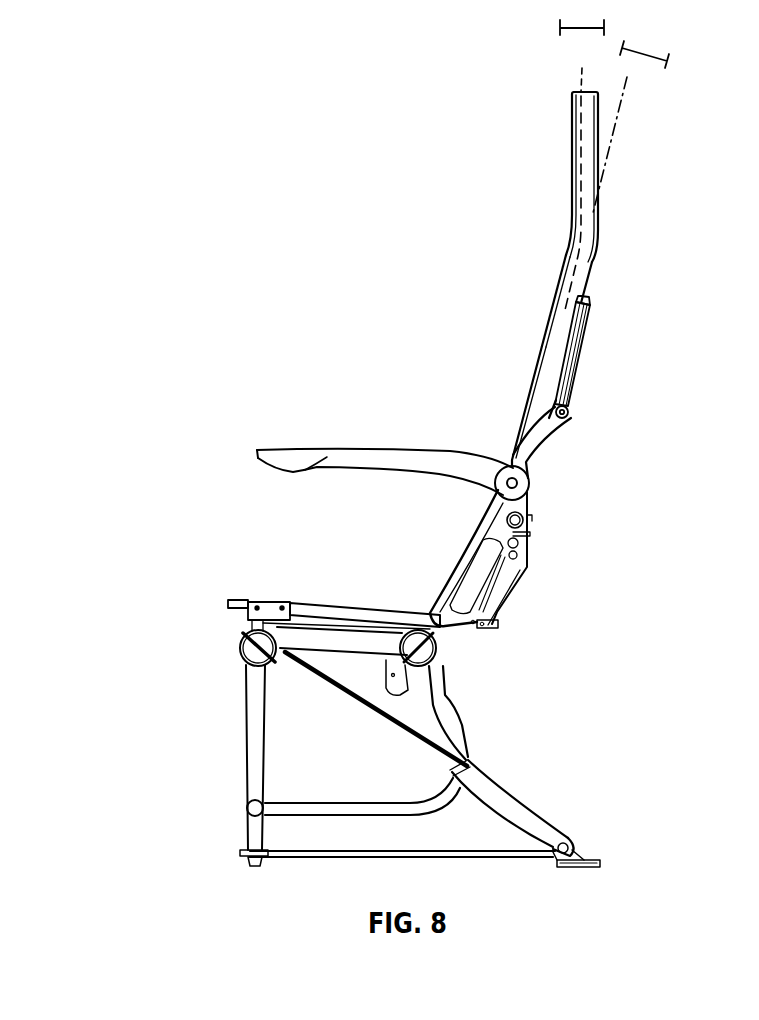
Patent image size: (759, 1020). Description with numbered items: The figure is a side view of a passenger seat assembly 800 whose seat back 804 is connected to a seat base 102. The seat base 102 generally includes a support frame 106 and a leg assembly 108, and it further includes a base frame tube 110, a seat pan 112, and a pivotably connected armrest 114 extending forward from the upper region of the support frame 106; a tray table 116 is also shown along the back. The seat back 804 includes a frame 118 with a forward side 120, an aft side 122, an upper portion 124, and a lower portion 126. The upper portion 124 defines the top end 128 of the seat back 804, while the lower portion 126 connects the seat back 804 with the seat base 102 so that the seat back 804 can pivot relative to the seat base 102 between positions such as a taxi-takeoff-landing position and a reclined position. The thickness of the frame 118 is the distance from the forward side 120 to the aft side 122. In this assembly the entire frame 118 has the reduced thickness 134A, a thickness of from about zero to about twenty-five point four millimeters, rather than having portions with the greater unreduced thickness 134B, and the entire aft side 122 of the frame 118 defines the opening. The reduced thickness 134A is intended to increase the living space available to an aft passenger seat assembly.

The passenger seat assembly 800 is at (216, 113).
The seat base 102 is at (240, 600).
The support frame 106 is at (472, 598).
The leg assembly 108 is at (247, 740).
The base frame tube 110 is at (241, 652).
The seat pan 112 is at (315, 605).
The armrest 114 is at (293, 458).
The tray table 116 is at (578, 362).
The frame 118 is at (590, 105).
The forward side 120 is at (559, 269).
The aft side 122 is at (598, 212).
The upper portion 124 is at (571, 162).
The lower portion 126 is at (539, 338).
The top end 128 is at (585, 87).
The reduced thickness 134A is at (564, 33).
The unreduced thickness 134B is at (645, 48).
The seat back 804 is at (592, 145).